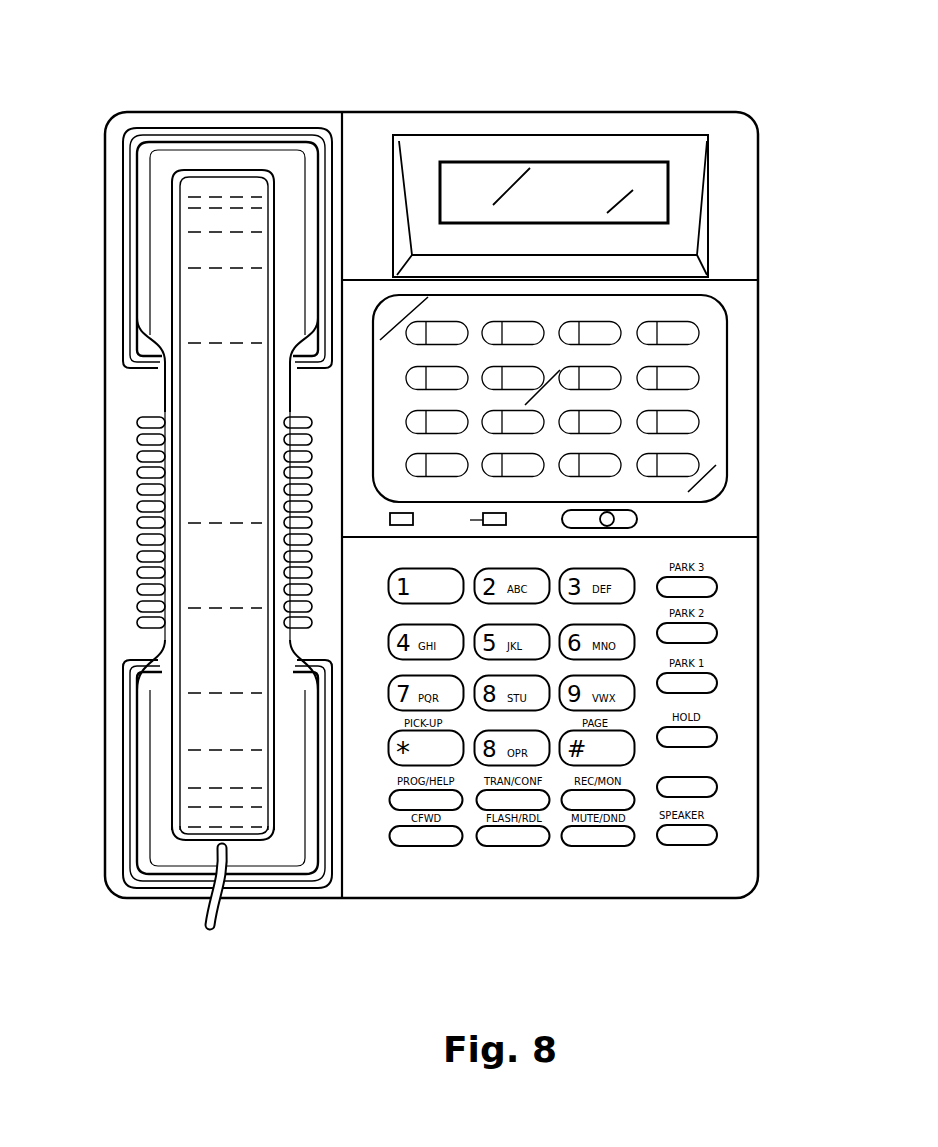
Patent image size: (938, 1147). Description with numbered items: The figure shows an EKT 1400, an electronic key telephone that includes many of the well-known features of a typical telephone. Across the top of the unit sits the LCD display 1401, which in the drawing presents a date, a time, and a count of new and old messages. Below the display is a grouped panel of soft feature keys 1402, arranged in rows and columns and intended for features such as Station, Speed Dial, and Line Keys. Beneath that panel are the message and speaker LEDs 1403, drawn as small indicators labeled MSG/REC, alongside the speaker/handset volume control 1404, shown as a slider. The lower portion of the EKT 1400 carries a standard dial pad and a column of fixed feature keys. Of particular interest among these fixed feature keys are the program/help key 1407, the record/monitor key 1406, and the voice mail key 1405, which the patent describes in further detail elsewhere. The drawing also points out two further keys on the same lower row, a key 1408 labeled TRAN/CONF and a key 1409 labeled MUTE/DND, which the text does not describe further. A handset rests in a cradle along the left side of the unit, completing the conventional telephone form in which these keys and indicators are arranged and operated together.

The EKT 1400 is at (580, 100).
The LCD display 1401 is at (650, 178).
The soft feature keys 1402 is at (717, 360).
The message and speaker LEDs 1403 is at (390, 519).
The speaker/handset volume control 1404 is at (640, 526).
The voice mail key 1405 is at (717, 788).
The record/monitor key 1406 is at (562, 803).
The program/help key 1407 is at (392, 803).
The transfer/conference key 1408 is at (480, 803).
The mute/do-not-disturb key 1409 is at (628, 842).